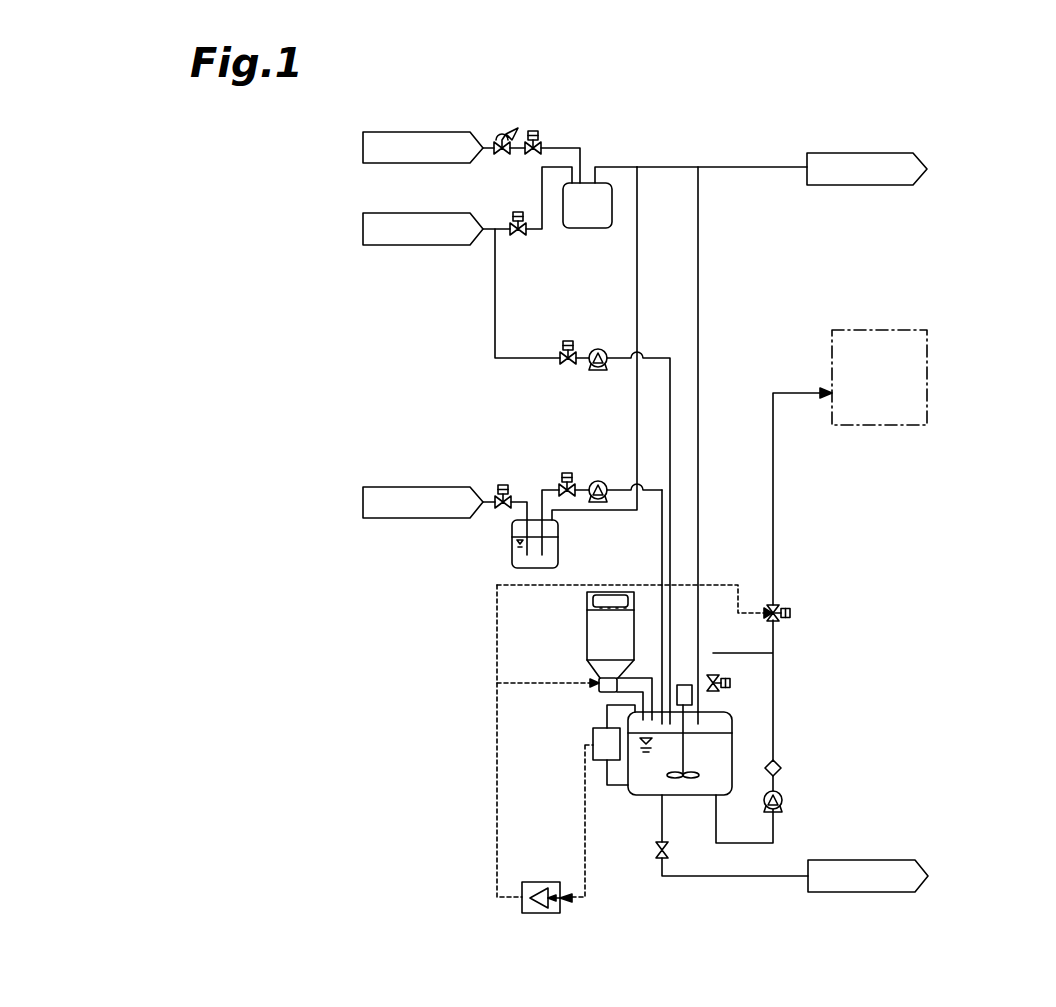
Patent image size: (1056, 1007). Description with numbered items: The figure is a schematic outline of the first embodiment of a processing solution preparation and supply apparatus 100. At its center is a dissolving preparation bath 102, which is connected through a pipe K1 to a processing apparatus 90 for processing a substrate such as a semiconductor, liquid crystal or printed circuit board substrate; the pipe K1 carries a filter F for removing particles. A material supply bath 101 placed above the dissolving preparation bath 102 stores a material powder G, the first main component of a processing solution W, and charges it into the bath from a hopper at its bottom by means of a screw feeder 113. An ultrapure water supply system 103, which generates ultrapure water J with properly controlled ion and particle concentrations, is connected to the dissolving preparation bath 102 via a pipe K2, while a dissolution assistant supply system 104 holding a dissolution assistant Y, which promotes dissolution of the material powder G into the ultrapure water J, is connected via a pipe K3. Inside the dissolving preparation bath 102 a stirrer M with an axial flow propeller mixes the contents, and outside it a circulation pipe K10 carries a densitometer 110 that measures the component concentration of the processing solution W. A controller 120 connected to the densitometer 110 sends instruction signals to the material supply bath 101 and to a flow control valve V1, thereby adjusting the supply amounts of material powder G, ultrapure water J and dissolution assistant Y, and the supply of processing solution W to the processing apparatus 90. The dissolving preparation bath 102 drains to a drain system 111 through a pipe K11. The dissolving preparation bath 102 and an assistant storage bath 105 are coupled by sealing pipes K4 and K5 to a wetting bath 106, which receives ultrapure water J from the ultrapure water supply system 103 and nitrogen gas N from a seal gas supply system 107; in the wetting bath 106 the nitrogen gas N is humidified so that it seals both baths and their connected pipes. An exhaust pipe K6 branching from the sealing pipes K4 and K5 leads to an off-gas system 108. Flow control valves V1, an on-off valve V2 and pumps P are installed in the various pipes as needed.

The processing solution preparation and supply apparatus 100 is at (1055, 281).
The processing apparatus 90 is at (885, 330).
The material supply bath 101 is at (587, 627).
The dissolving preparation bath 102 is at (652, 797).
The ultrapure water supply system 103 is at (420, 252).
The dissolution assistant supply system 104 is at (404, 527).
The assistant storage bath 105 is at (512, 552).
The wetting bath 106 is at (587, 229).
The seal gas supply system 107 is at (420, 170).
The off-gas system 108 is at (868, 197).
The densitometer 110 is at (593, 735).
The drain system 111 is at (867, 852).
The screw feeder 113 is at (601, 688).
The controller 120 is at (522, 905).
The flow control valve V1 is at (540, 138).
The on-off valve V2 is at (656, 855).
The pump P is at (598, 370).
The filter F is at (783, 768).
The stirrer M is at (684, 695).
The processing solution W is at (691, 790).
The material powder G is at (590, 665).
The nitrogen gas N is at (363, 150).
The ultrapure water J is at (363, 231).
The dissolution assistant Y is at (363, 504).
The pipe K1 is at (776, 686).
The pipe K2 is at (495, 293).
The pipe K3 is at (662, 553).
The sealing pipe K4 is at (698, 252).
The sealing pipe K5 is at (637, 252).
The exhaust pipe K6 is at (732, 167).
The circulation pipe K10 is at (606, 784).
The pipe K11 is at (745, 877).